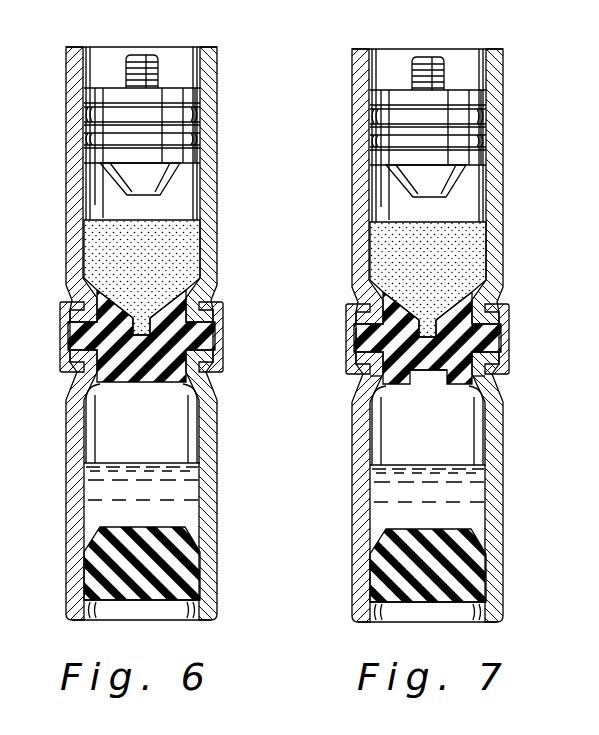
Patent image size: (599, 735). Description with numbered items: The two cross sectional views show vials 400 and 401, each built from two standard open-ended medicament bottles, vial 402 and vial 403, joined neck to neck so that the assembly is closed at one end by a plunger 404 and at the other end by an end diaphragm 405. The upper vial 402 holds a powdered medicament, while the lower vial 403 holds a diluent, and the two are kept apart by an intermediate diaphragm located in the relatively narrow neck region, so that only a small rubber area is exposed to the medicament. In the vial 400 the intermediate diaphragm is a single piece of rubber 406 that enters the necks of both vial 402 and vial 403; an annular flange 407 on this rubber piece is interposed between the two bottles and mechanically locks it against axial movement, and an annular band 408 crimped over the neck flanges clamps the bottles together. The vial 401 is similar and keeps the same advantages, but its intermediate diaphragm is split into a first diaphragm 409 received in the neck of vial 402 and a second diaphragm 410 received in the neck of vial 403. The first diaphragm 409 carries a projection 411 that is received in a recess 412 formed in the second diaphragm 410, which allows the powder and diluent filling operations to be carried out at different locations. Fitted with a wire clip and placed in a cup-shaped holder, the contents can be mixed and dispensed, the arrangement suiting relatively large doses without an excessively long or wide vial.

In FIG. 6, the vial 400 is at (222, 160).
In FIG. 7, the vial 401 is at (348, 208).
In FIG. 6, the vial 402 is at (217, 65).
In FIG. 7, the vial 402 is at (446, 325).
In FIG. 6, the vial 403 is at (74, 468).
In FIG. 7, the vial 403 is at (387, 492).
In FIG. 6, the plunger 404 is at (106, 88).
In FIG. 7, the plunger 404 is at (428, 115).
In FIG. 6, the end diaphragm 405 is at (88, 572).
In FIG. 7, the end diaphragm 405 is at (387, 565).
In FIG. 6, the single piece of rubber 406 is at (188, 382).
In FIG. 7, the single piece of rubber 406 is at (427, 338).
In FIG. 6, the annular flange 407 is at (62, 330).
In FIG. 7, the annular flange 407 is at (330, 339).
In FIG. 6, the annular band 408 is at (222, 312).
In FIG. 7, the annular band 408 is at (522, 328).
In FIG. 7, the first diaphragm 409 is at (329, 334).
In FIG. 7, the second diaphragm 410 is at (341, 400).
In FIG. 7, the projection 411 is at (517, 382).
In FIG. 7, the recess 412 is at (417, 409).